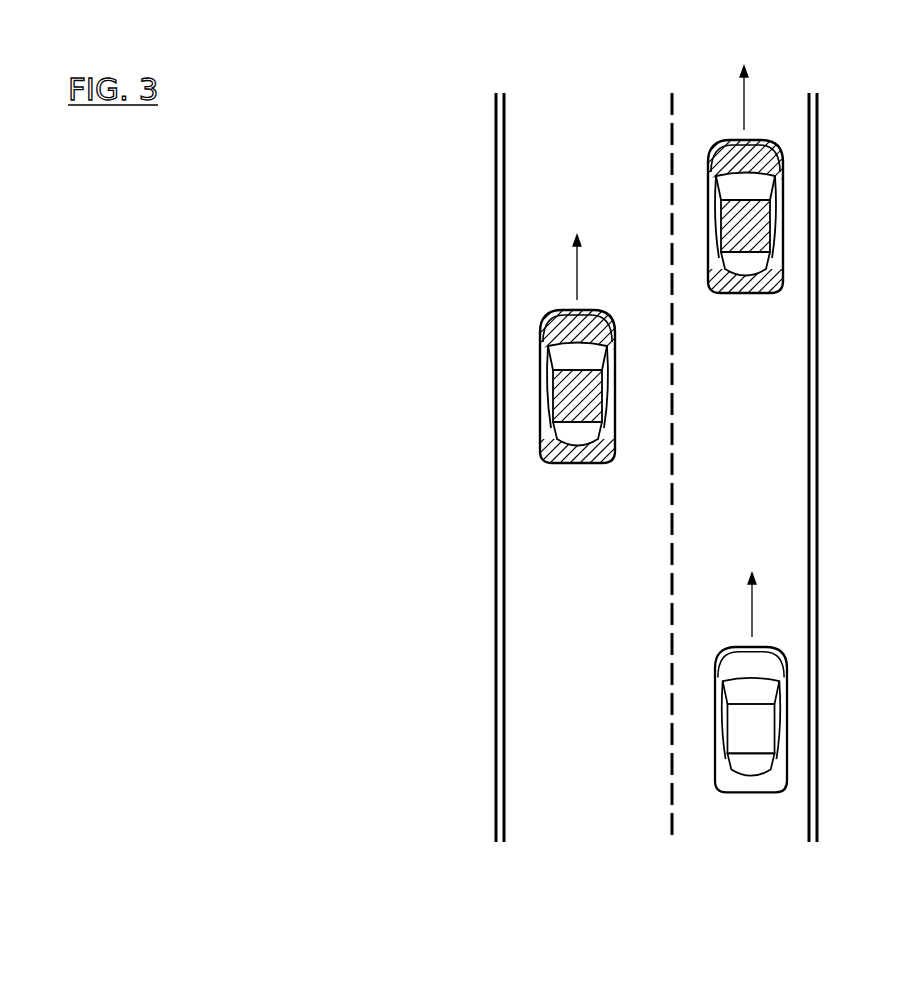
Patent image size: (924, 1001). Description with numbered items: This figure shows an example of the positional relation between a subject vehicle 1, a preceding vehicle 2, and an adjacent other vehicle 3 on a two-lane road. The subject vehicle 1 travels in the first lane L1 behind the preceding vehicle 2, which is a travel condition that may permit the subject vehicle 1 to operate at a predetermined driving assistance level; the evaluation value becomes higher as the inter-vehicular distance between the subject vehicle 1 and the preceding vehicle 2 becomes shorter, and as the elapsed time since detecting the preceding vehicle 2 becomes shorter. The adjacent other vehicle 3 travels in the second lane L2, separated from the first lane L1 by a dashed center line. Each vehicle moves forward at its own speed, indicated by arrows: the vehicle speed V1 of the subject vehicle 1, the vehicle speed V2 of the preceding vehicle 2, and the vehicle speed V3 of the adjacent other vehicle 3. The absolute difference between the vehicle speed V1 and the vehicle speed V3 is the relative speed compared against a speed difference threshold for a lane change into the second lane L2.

The subject vehicle 1 is at (788, 722).
The preceding vehicle 2 is at (775, 222).
The adjacent other vehicle 3 is at (540, 397).
The first lane L1 is at (742, 820).
The second lane L2 is at (577, 815).
The vehicle speed of the subject vehicle V1 is at (777, 605).
The vehicle speed of the preceding vehicle V2 is at (769, 98).
The vehicle speed of the adjacent other vehicle V3 is at (602, 267).